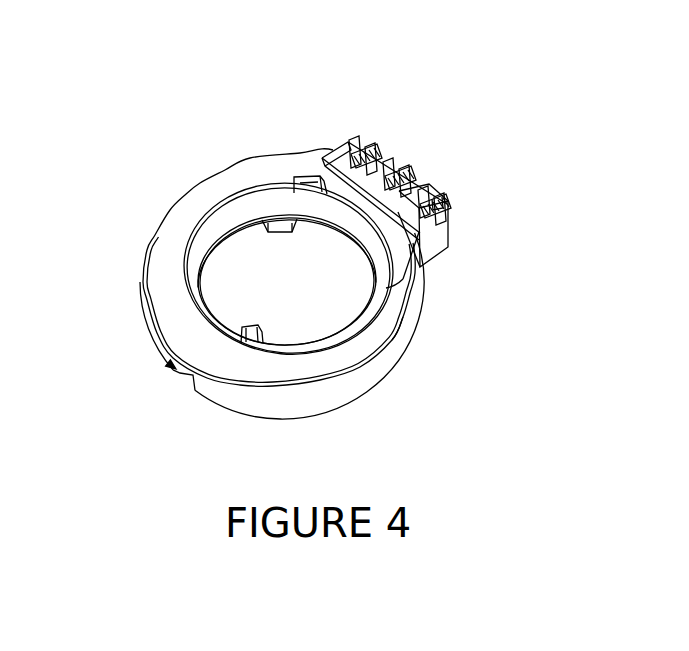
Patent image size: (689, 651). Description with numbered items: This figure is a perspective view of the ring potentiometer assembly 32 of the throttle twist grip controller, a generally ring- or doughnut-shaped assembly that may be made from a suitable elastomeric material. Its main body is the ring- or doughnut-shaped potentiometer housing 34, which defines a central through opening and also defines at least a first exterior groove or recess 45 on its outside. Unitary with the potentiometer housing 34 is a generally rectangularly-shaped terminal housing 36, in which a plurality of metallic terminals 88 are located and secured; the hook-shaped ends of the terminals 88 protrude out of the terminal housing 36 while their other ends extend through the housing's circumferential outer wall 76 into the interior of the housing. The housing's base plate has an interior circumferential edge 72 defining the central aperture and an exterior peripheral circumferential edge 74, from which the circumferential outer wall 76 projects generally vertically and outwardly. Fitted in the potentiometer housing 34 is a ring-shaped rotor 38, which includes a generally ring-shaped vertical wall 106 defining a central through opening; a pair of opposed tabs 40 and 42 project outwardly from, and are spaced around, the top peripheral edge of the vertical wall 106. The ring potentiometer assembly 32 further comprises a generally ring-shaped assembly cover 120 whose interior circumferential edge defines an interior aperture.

The ring potentiometer assembly 32 is at (251, 133).
The potentiometer housing 34 is at (398, 367).
The terminal housing 36 is at (440, 233).
The rotor 38 is at (300, 170).
The tab 40 is at (241, 327).
The tab 42 is at (307, 192).
The exterior groove 45 is at (187, 375).
The interior circumferential edge 72 is at (243, 235).
The exterior peripheral circumferential edge 74 is at (333, 412).
The circumferential outer wall 76 is at (418, 326).
The terminals 88 is at (385, 150).
The vertical wall 106 is at (222, 224).
The assembly cover 120 is at (402, 281).